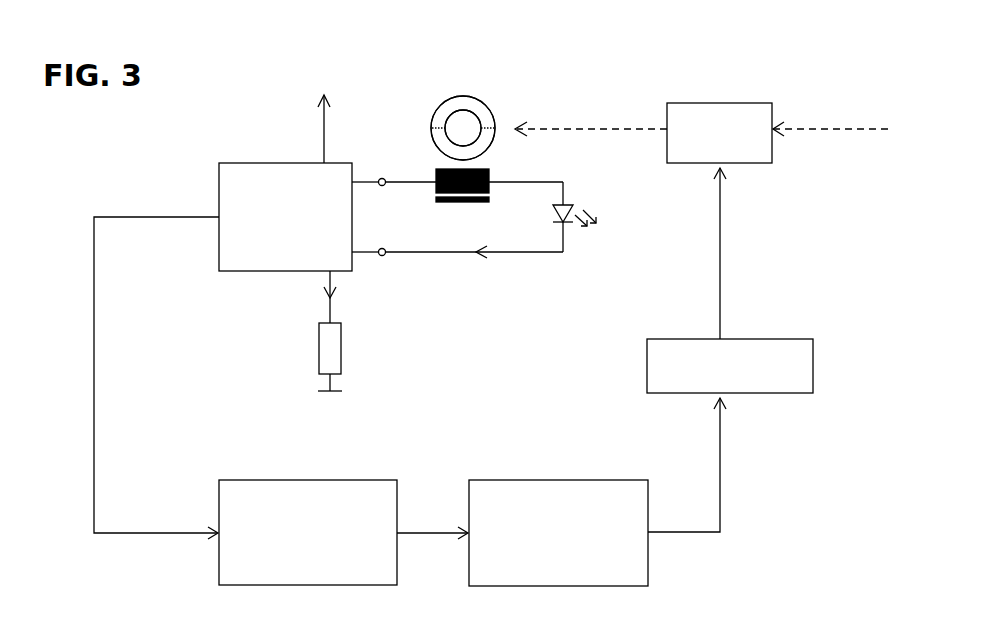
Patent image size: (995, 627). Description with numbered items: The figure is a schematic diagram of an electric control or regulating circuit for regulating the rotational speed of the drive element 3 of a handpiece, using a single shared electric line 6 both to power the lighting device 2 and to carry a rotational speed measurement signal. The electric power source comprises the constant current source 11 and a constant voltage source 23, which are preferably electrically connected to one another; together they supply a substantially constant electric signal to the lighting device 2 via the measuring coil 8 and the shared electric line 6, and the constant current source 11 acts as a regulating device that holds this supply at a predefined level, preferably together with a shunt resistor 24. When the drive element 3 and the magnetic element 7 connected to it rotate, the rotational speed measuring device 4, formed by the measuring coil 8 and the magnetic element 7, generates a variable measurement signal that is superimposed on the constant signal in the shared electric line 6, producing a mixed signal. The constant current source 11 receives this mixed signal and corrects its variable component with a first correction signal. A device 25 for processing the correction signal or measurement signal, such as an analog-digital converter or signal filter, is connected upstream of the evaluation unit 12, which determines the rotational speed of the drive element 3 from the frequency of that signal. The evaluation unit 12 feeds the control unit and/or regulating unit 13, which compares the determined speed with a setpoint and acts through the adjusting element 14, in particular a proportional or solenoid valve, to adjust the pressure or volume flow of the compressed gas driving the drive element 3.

The lighting device 2 is at (572, 236).
The drive element 3 is at (469, 124).
The rotational speed measuring device 4 is at (431, 161).
The shared electric line 6 is at (405, 259).
The magnetic element 7 is at (448, 97).
The measuring coil 8 is at (491, 171).
The constant current source 11 is at (303, 249).
The evaluation unit 12 is at (575, 555).
The control unit and/or regulating unit 13 is at (733, 380).
The adjusting element 14 is at (736, 146).
The constant voltage source 23 is at (332, 83).
The shunt resistor 24 is at (310, 362).
The device for processing the first correction signal or the rotational speed measur 25 is at (318, 555).